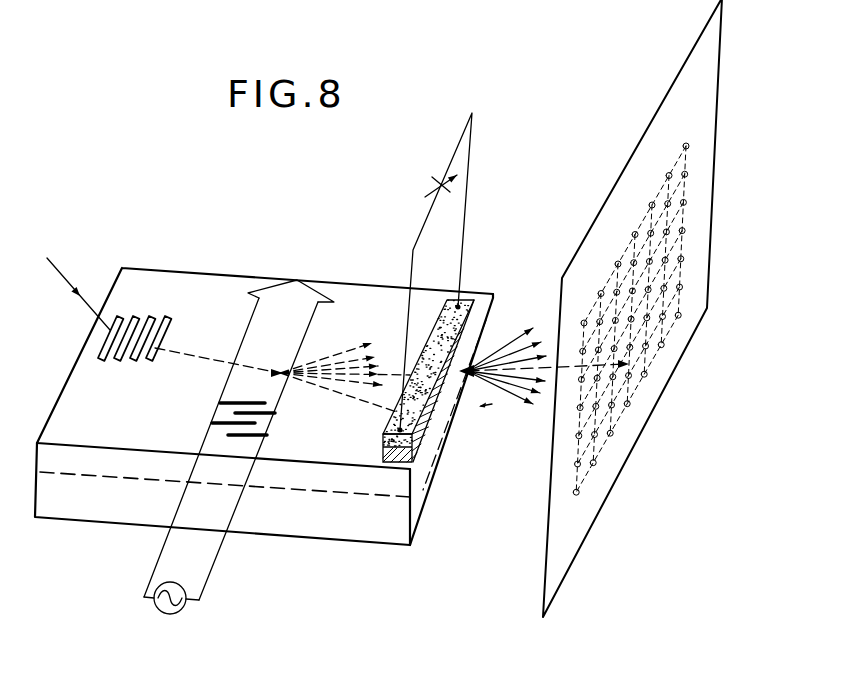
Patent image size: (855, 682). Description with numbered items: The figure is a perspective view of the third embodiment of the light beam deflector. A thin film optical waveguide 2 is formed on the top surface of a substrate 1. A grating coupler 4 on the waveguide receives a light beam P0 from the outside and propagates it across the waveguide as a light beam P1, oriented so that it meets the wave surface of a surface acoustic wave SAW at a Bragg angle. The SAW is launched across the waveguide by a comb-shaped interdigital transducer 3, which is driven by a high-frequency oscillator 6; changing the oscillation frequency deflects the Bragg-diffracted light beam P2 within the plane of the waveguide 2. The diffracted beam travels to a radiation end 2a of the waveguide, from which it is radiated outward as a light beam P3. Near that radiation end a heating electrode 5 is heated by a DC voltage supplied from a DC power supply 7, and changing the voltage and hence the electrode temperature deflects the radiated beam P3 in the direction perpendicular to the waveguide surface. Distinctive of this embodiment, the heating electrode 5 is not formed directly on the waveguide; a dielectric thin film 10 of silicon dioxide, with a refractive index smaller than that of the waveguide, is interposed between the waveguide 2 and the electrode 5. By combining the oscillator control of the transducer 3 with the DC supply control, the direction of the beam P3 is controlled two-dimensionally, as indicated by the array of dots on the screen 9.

The substrate 1 is at (110, 512).
The thin film optical waveguide 2 is at (72, 380).
The radiation end 2a is at (442, 422).
The comb-shaped electrode (IDT) 3 is at (210, 423).
The grating coupler 4 is at (152, 317).
The heating electrode 5 is at (470, 297).
The high-frequency oscillator 6 is at (157, 613).
The DC power supply 7 is at (438, 172).
The screen 9 is at (683, 337).
The dielectric thin film 10 is at (413, 463).
The light beam from the outside P0 is at (67, 263).
The light beam propagating in the waveguide P1 is at (195, 362).
The Bragg-diffracted light beam P2 is at (338, 353).
The radiated light beam P3 is at (510, 333).
The surface acoustic wave SAW is at (315, 273).